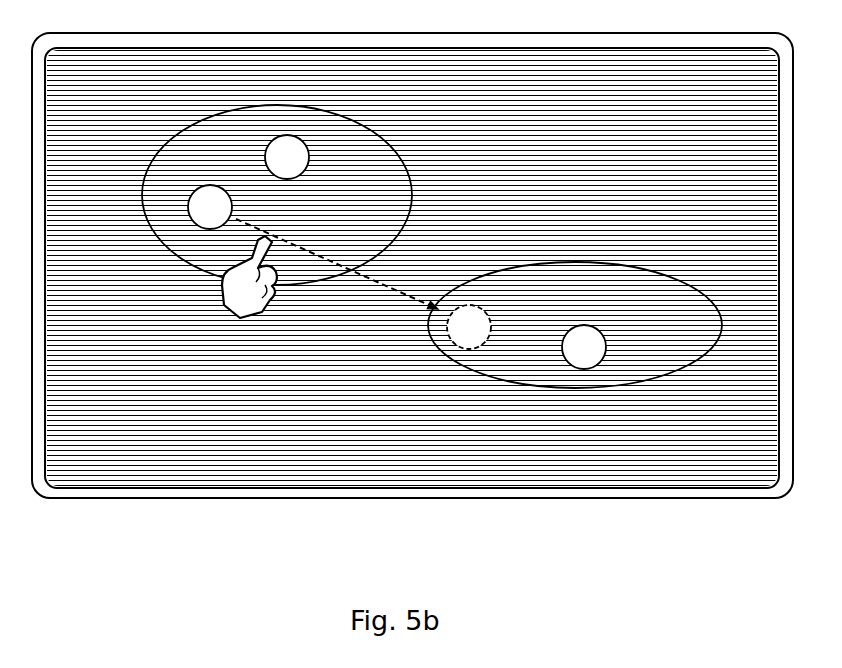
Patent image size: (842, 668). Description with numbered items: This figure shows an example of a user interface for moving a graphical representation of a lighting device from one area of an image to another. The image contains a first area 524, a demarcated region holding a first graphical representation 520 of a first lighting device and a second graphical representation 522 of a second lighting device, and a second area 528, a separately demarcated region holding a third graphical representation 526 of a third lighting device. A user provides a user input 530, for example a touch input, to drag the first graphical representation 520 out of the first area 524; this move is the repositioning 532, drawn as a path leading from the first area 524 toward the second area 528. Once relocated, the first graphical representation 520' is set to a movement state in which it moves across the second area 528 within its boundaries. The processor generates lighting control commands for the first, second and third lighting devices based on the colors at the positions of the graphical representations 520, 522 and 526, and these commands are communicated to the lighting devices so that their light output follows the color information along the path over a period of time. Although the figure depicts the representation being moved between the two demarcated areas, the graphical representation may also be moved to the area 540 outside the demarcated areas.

The area outside the demarcated area 540 is at (547, 115).
The first area 524 is at (408, 170).
The second graphical representation 522 is at (277, 148).
The first graphical representation 520 is at (157, 207).
The repositioning 532 is at (410, 272).
The user input 530 is at (243, 300).
The second area 528 is at (535, 262).
The first graphical representation (moved) 520' is at (414, 327).
The third graphical representation 526 is at (577, 338).